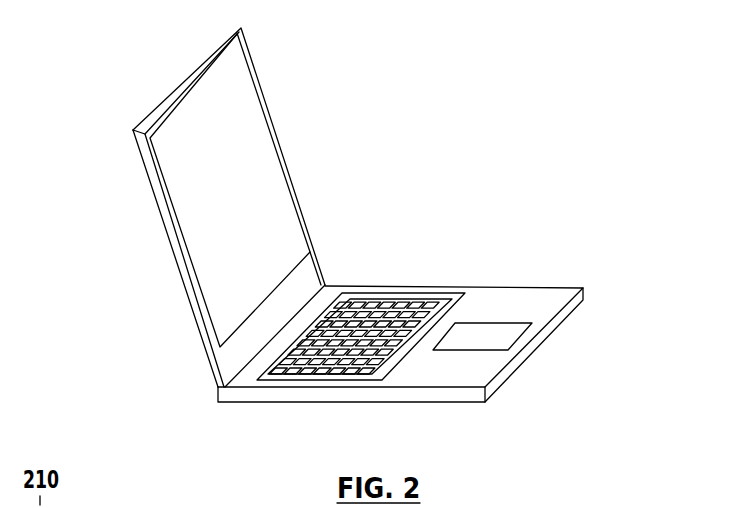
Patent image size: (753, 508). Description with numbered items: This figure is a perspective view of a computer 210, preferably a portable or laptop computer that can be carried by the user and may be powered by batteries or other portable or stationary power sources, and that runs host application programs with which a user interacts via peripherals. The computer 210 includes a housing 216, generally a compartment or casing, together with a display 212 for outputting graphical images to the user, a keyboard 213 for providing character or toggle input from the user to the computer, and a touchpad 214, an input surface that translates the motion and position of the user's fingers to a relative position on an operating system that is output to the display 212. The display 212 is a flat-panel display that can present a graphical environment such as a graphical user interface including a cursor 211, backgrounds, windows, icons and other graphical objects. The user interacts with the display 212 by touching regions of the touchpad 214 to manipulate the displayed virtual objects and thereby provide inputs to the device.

The computer 210 is at (123, 95).
The cursor 211 is at (222, 206).
The display 212 is at (260, 155).
The keyboard 213 is at (299, 384).
The touchpad 214 is at (497, 338).
The housing 216 is at (518, 296).